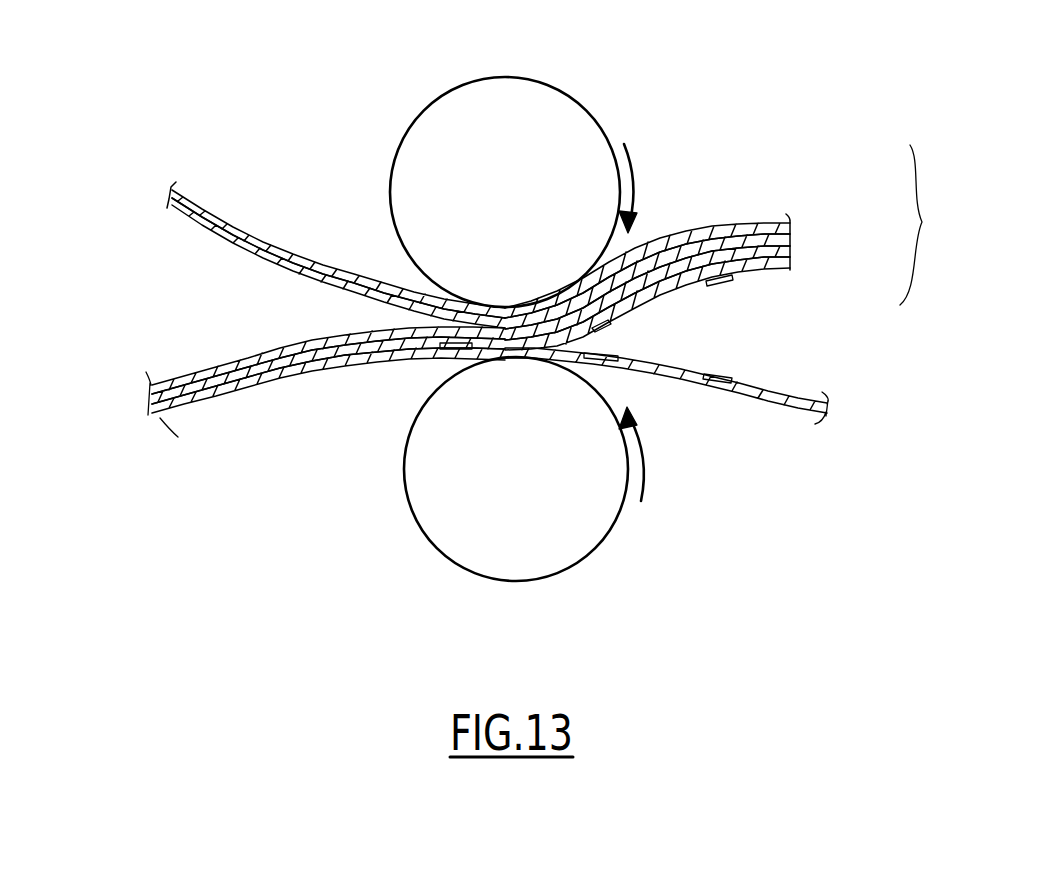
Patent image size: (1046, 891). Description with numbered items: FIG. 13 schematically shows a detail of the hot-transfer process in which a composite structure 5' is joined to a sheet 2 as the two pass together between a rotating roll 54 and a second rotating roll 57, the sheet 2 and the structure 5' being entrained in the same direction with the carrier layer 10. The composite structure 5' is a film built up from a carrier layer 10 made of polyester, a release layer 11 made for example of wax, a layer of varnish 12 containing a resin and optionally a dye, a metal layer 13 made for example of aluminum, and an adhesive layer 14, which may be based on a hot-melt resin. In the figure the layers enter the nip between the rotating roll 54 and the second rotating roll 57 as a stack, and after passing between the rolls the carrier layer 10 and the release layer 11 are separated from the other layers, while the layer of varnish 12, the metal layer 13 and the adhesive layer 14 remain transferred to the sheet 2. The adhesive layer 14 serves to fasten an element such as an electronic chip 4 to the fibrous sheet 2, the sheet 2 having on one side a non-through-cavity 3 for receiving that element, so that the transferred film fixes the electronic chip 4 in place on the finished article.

The sheet 2 is at (165, 422).
The non-through-cavity 3 is at (720, 372).
The electronic chip 4 is at (722, 284).
The composite structure 5' is at (925, 225).
The carrier layer 10 is at (197, 190).
The release layer 11 is at (170, 206).
The layer of varnish 12 is at (148, 390).
The metal layer 13 is at (152, 400).
The adhesive layer 14 is at (152, 410).
The rotating roll 54 is at (543, 112).
The second rotating roll 57 is at (535, 543).